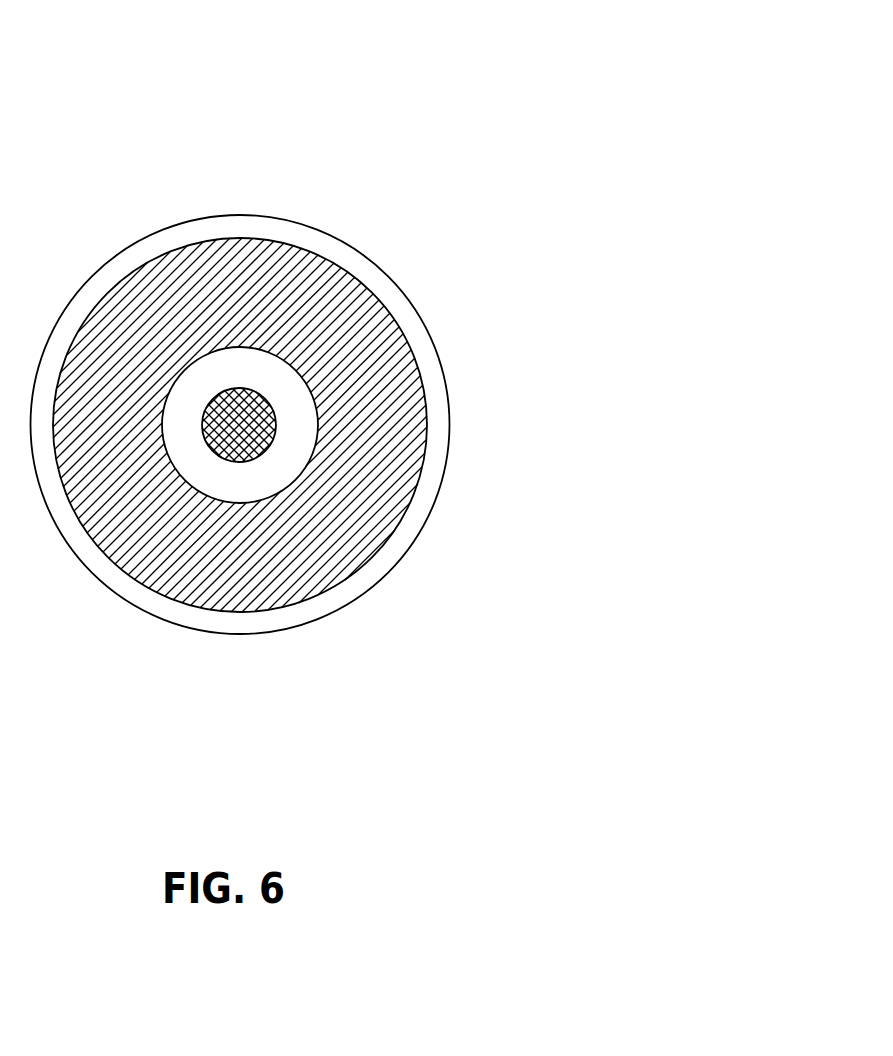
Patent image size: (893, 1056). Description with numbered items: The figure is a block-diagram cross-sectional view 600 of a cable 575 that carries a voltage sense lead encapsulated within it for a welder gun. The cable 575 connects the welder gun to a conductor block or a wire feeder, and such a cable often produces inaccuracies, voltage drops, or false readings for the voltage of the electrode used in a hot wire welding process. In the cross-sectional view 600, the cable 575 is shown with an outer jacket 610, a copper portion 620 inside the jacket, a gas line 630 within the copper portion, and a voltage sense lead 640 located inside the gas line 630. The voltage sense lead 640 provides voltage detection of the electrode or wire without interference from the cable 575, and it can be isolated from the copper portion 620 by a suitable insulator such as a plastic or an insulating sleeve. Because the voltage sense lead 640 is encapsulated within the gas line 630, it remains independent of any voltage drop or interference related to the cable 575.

The cross-sectional view 600 is at (463, 50).
The cable 575 is at (343, 189).
The jacket 610 is at (398, 307).
The copper portion 620 is at (358, 352).
The gas line 630 is at (290, 413).
The voltage sense lead 640 is at (250, 431).